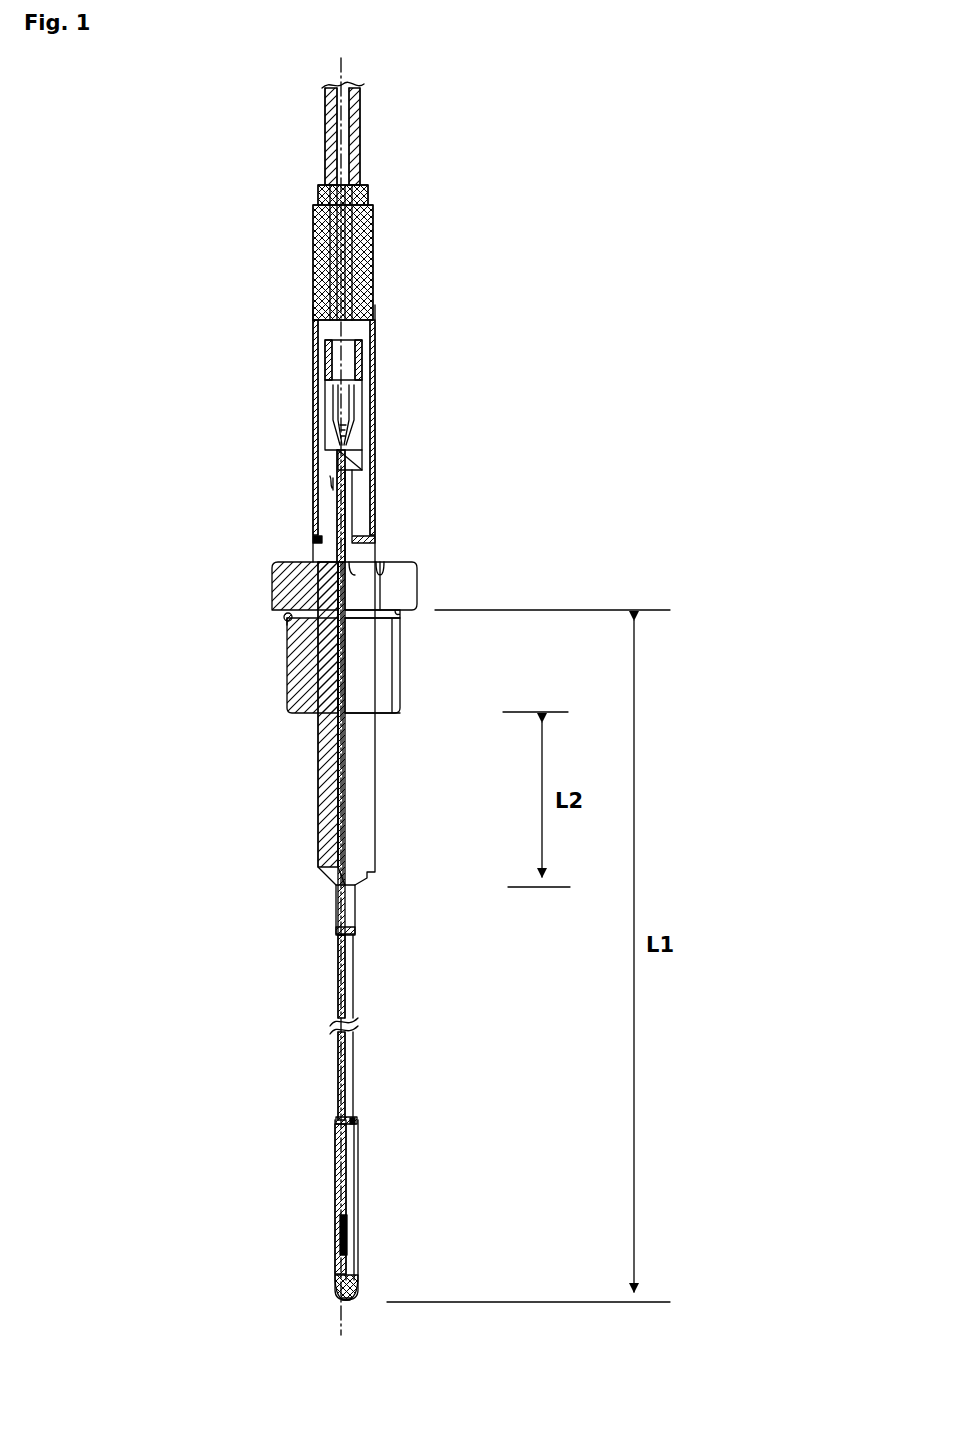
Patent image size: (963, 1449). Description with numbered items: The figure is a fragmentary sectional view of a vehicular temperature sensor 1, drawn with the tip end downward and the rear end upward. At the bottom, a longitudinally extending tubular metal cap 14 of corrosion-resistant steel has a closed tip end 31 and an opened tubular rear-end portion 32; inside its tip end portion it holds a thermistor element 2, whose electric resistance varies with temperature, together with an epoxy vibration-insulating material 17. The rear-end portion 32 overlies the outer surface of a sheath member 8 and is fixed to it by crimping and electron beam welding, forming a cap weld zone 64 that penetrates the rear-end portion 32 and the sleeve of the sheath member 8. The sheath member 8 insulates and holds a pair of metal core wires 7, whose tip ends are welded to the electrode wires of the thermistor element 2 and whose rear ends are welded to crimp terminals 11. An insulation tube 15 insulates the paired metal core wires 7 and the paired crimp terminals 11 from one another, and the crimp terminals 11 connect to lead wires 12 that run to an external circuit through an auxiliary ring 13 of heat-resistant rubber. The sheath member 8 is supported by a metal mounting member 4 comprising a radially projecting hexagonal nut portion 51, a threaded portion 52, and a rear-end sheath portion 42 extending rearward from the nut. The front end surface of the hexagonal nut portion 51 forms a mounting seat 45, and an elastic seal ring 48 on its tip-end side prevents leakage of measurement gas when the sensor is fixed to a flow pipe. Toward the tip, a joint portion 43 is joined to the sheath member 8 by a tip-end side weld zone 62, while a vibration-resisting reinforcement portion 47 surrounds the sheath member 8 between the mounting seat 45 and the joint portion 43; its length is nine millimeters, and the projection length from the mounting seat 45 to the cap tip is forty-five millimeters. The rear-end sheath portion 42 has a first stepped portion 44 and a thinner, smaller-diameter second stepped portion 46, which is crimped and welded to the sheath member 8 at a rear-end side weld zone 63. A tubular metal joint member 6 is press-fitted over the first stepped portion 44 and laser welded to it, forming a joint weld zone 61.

The temperature sensor 1 is at (128, 236).
The thermistor element 2 is at (336, 1270).
The mounting member 4 is at (383, 726).
The joint member 6 is at (315, 385).
The metal core wires 7 is at (333, 432).
The sheath member 8 is at (340, 990).
The crimp terminals 11 is at (326, 345).
The lead wires 12 is at (325, 122).
The auxiliary ring 13 is at (373, 195).
The metal cap 14 is at (358, 1255).
The insulation tube 15 is at (355, 410).
The vibration-insulating material 17 is at (345, 1300).
The tip end 31 is at (350, 1302).
The rear-end portion 32 is at (354, 1118).
The rear-end sheath portion 42 is at (181, 465).
The joint portion 43 is at (336, 900).
The first stepped portion 44 is at (315, 520).
The mounting seat 45 is at (284, 618).
The second stepped portion 46 is at (313, 500).
The vibration-resisting reinforcement portion 47 is at (318, 810).
The seal ring 48 is at (289, 625).
The hexagonal nut portion 51 is at (272, 585).
The threaded portion 52 is at (292, 688).
The joint weld zone 61 is at (317, 540).
The tip-end side weld zone 62 is at (338, 930).
The rear-end side weld zone 63 is at (347, 482).
The cap weld zone 64 is at (336, 1122).